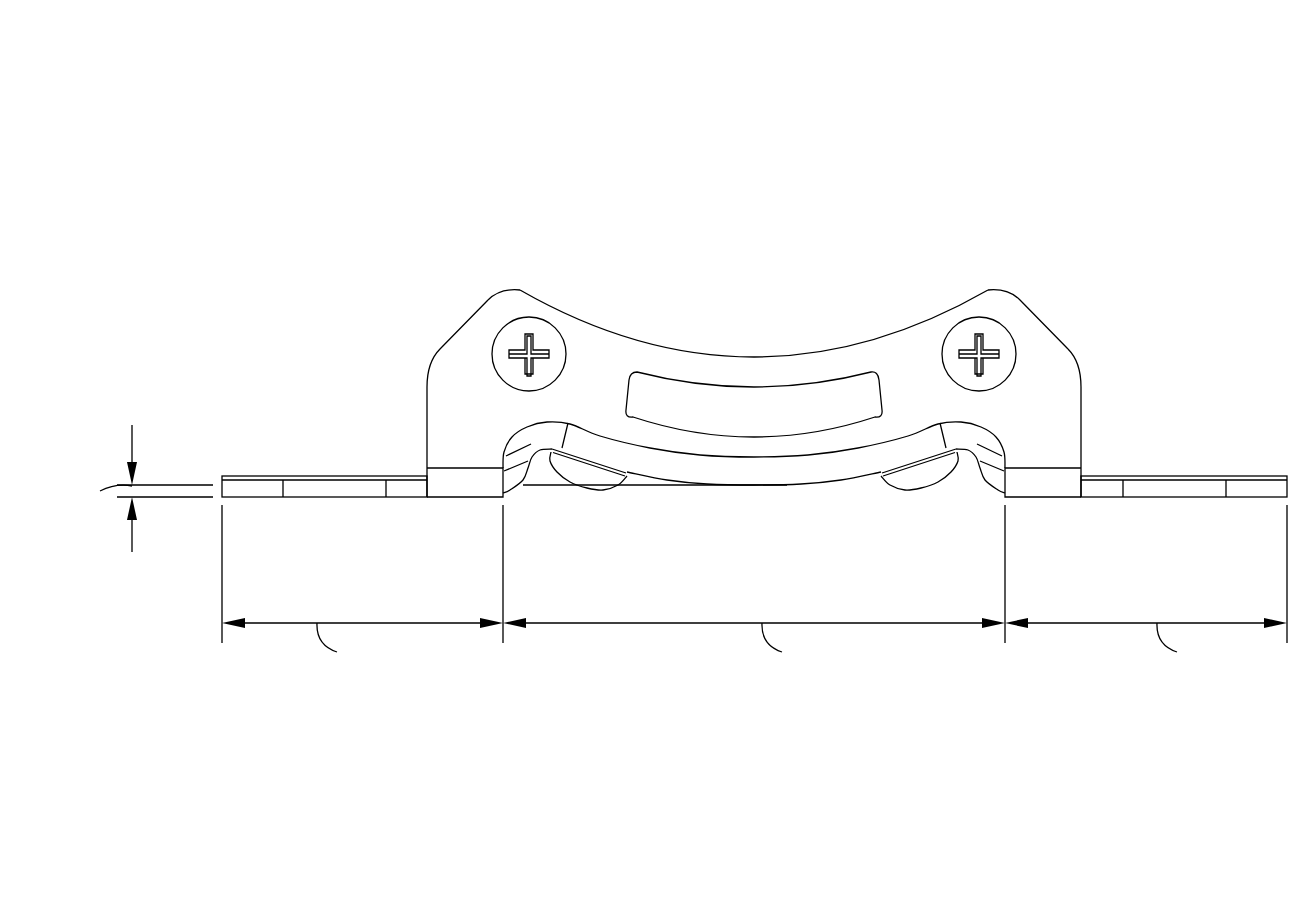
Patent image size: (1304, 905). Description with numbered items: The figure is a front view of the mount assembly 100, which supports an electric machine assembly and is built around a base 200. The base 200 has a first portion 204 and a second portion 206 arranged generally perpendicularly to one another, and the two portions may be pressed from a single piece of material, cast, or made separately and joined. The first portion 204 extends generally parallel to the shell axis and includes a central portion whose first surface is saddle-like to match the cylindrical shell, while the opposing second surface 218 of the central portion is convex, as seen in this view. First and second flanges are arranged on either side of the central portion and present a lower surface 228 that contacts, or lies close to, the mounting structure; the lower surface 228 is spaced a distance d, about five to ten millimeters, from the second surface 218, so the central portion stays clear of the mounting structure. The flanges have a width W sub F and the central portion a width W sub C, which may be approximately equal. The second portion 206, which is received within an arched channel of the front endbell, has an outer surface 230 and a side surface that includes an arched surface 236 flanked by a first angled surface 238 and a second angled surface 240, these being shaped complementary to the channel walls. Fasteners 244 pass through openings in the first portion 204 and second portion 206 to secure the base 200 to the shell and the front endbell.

The mount assembly 100 is at (752, 152).
The base 200 is at (455, 390).
The first portion 204 is at (246, 475).
The second portion 206 is at (590, 380).
The second surface 218 is at (784, 486).
The lower surface 228 is at (330, 498).
The outer surface 230 is at (1062, 378).
The arched surface 236 is at (745, 357).
The first angled surface 238 is at (486, 303).
The second angled surface 240 is at (1047, 330).
The fasteners 244 is at (1000, 342).